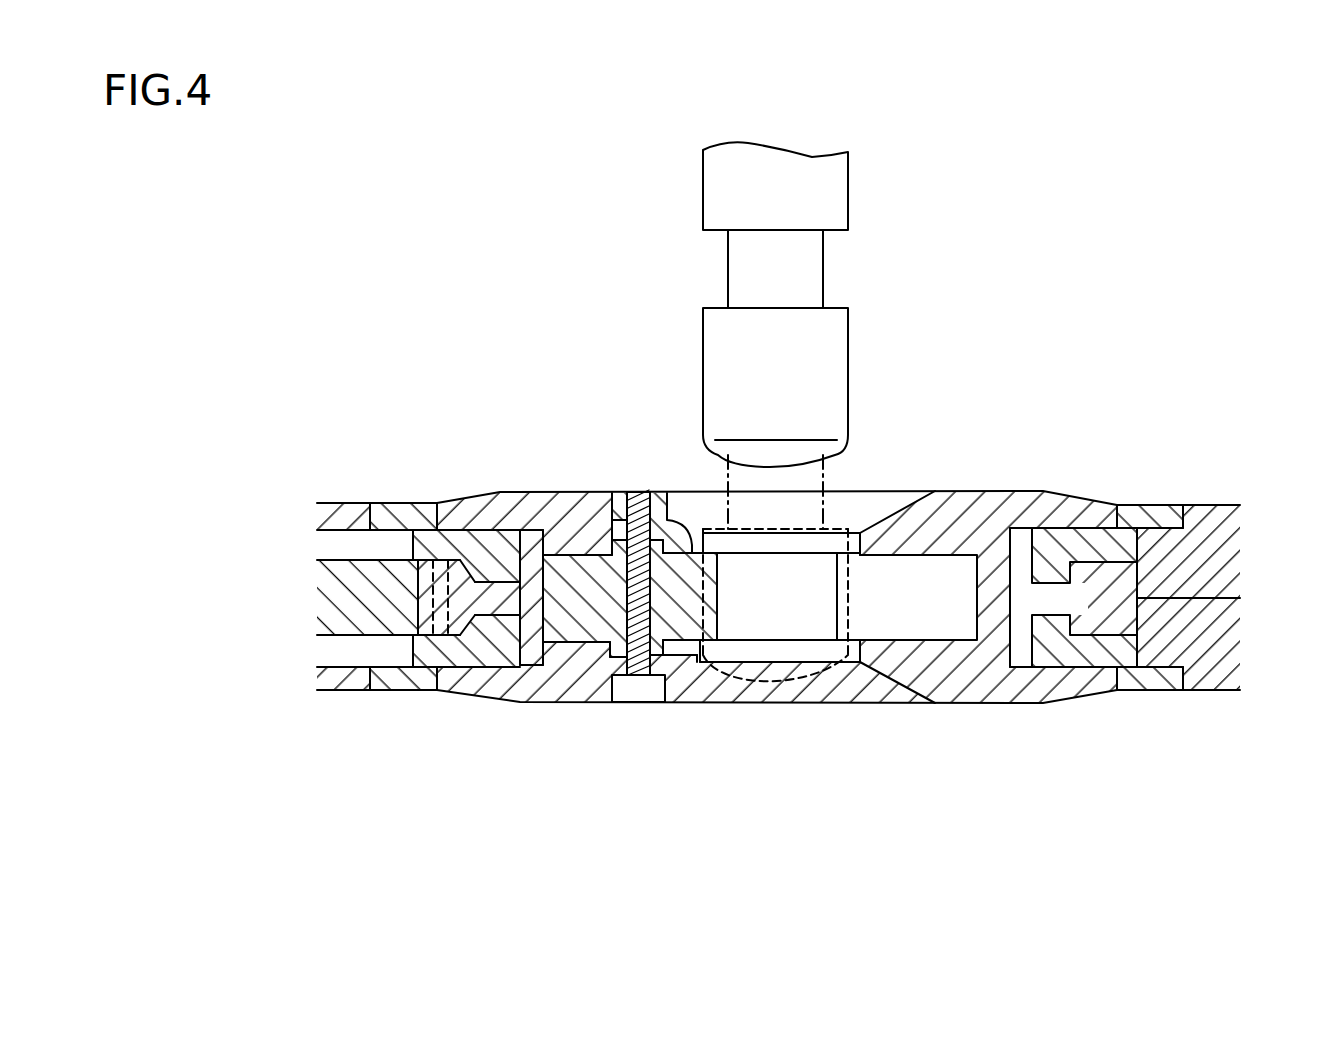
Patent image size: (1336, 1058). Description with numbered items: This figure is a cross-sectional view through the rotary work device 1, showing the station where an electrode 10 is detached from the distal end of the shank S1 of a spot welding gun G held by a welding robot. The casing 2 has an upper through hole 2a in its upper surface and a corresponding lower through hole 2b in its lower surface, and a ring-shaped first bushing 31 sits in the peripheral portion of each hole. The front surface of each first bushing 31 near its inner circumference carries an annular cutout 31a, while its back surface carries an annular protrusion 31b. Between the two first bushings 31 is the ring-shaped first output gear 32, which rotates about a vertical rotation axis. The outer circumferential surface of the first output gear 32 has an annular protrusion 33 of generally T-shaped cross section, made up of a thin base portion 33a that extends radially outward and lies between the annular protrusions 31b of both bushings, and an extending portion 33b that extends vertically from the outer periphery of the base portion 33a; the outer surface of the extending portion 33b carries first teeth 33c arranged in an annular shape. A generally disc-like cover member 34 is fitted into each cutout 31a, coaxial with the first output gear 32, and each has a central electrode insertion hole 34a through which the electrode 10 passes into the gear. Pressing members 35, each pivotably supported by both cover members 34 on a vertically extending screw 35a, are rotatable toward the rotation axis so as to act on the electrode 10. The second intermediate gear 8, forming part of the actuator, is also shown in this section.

The rotary work device 1 is at (1186, 372).
The casing 2 is at (1216, 500).
The upper through hole 2a is at (378, 518).
The lower through hole 2b is at (376, 682).
The second intermediate gear 8 is at (356, 558).
The electrode 10 is at (850, 385).
The first bushing 31 is at (1150, 500).
The annular cutout 31a is at (1080, 503).
The annular protrusion 31b is at (1036, 580).
The first output gear 32 is at (530, 672).
The annular protrusion 33 is at (772, 718).
The base portion 33a is at (498, 622).
The extending portion 33b is at (458, 636).
The first teeth 33c is at (410, 583).
The cover member 34 is at (545, 490).
The electrode insertion hole 34a is at (712, 530).
The pressing member 35 is at (680, 625).
The screw 35a is at (625, 612).
The spot welding gun G is at (858, 178).
The shank S1 is at (826, 268).